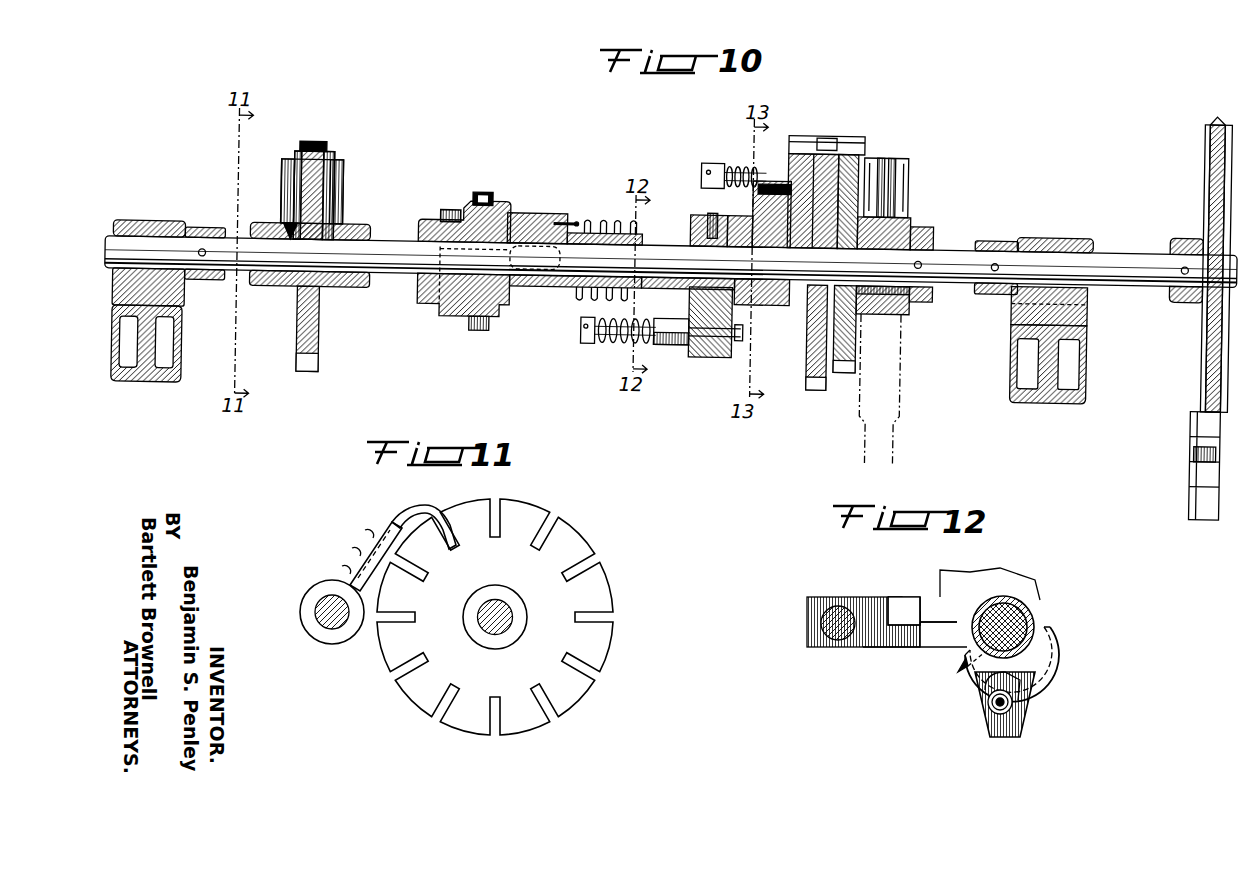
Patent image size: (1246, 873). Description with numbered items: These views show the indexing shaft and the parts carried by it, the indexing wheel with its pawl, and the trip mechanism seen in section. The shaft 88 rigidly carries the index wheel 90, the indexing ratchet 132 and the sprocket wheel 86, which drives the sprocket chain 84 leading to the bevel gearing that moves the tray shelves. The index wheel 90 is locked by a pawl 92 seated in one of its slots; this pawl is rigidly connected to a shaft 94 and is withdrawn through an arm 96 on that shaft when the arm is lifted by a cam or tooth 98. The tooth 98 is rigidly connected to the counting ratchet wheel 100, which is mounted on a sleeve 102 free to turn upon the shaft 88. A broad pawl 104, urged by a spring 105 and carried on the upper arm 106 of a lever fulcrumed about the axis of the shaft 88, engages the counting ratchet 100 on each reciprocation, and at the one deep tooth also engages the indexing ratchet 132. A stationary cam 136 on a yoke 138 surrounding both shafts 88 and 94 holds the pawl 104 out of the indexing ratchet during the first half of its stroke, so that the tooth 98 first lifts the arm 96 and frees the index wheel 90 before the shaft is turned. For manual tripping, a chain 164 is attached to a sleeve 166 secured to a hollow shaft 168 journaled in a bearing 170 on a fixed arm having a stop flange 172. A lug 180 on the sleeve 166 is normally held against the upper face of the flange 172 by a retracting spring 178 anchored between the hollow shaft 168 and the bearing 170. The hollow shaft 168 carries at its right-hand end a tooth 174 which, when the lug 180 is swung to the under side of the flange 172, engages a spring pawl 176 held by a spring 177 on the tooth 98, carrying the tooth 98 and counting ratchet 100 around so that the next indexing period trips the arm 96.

In FIG. 10, the sprocket chain 84 is at (1208, 199).
In FIG. 10, the sprocket wheel 86 is at (1213, 179).
In FIG. 10, the shaft 88 is at (393, 270).
In FIG. 11, the shaft 88 is at (512, 612).
In FIG. 12, the shaft 88 is at (1010, 620).
In FIG. 10, the index wheel 90 is at (338, 183).
In FIG. 11, the index wheel 90 is at (540, 565).
In FIG. 10, the pawl 92 is at (326, 152).
In FIG. 11, the pawl 92 is at (405, 518).
In FIG. 11, the shaft 94 is at (316, 610).
In FIG. 12, the shaft 94 is at (840, 640).
In FIG. 12, the arm 96 is at (910, 600).
In FIG. 10, the cam or tooth 98 is at (715, 350).
In FIG. 12, the cam or tooth 98 is at (990, 734).
In FIG. 10, the counting ratchet wheel 100 is at (815, 375).
In FIG. 10, the sleeve 102 is at (768, 283).
In FIG. 10, the broad pawl 104 is at (850, 130).
In FIG. 10, the spring 105 is at (745, 170).
In FIG. 10, the upper arm 106 is at (893, 168).
In FIG. 10, the indexing ratchet 132 is at (846, 345).
In FIG. 10, the stationary cam 136 is at (800, 150).
In FIG. 10, the yoke 138 is at (766, 300).
In FIG. 12, the yoke 138 is at (902, 640).
In FIG. 10, the chain 164 is at (482, 188).
In FIG. 10, the sleeve 166 is at (464, 212).
In FIG. 10, the hollow shaft 168 is at (460, 277).
In FIG. 12, the hollow shaft 168 is at (1025, 640).
In FIG. 10, the bearing 170 is at (530, 213).
In FIG. 10, the stop flange 172 is at (512, 275).
In FIG. 12, the tooth 174 is at (960, 672).
In FIG. 10, the spring pawl 176 is at (670, 340).
In FIG. 12, the spring pawl 176 is at (1022, 690).
In FIG. 10, the spring 177 is at (620, 340).
In FIG. 12, the spring 177 is at (987, 703).
In FIG. 10, the retracting spring 178 is at (611, 206).
In FIG. 12, the retracting spring 178 is at (1050, 622).
In FIG. 10, the lug 180 is at (513, 240).